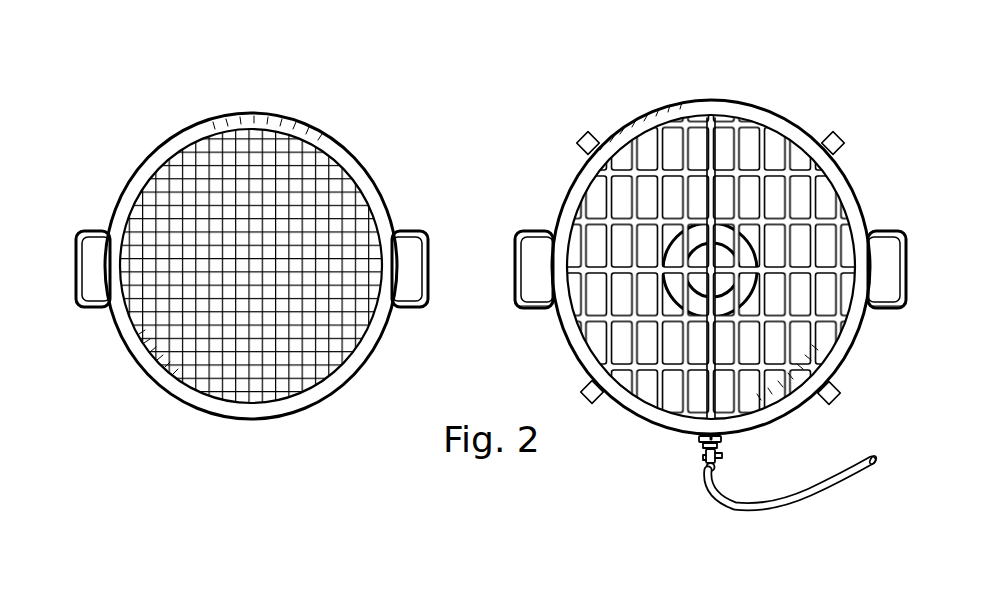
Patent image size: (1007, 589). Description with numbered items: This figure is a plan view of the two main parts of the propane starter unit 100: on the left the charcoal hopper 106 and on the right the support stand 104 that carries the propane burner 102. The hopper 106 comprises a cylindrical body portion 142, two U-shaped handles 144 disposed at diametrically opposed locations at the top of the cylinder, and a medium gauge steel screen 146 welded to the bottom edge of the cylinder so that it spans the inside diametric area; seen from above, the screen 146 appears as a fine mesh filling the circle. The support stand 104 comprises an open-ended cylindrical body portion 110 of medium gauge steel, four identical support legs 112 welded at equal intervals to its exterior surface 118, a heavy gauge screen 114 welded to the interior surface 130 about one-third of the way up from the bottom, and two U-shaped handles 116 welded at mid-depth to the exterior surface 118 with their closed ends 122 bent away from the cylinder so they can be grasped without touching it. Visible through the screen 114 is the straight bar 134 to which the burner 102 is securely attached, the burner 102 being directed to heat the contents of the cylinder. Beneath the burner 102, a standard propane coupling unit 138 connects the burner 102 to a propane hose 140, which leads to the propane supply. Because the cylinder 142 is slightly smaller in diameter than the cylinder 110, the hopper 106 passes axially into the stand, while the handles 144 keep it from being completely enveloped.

The propane starter unit 100 is at (254, 249).
The propane burner 102 is at (665, 279).
The support stand 104 is at (784, 109).
The hopper 106 is at (200, 116).
The cylindrical body portion 110 is at (680, 234).
The support legs 112 is at (585, 134).
The heavy gauge screen 114 is at (672, 197).
The U-shaped handles 116 is at (515, 283).
The exterior surface 118 is at (650, 420).
The closed end 122 is at (522, 306).
The interior surface 130 is at (572, 235).
The straight bar 134 is at (705, 175).
The propane coupling unit 138 is at (700, 458).
The propane hose 140 is at (810, 496).
The cylindrical body portion 142 is at (298, 119).
The U-shaped handles 144 is at (77, 258).
The screen 146 is at (190, 345).